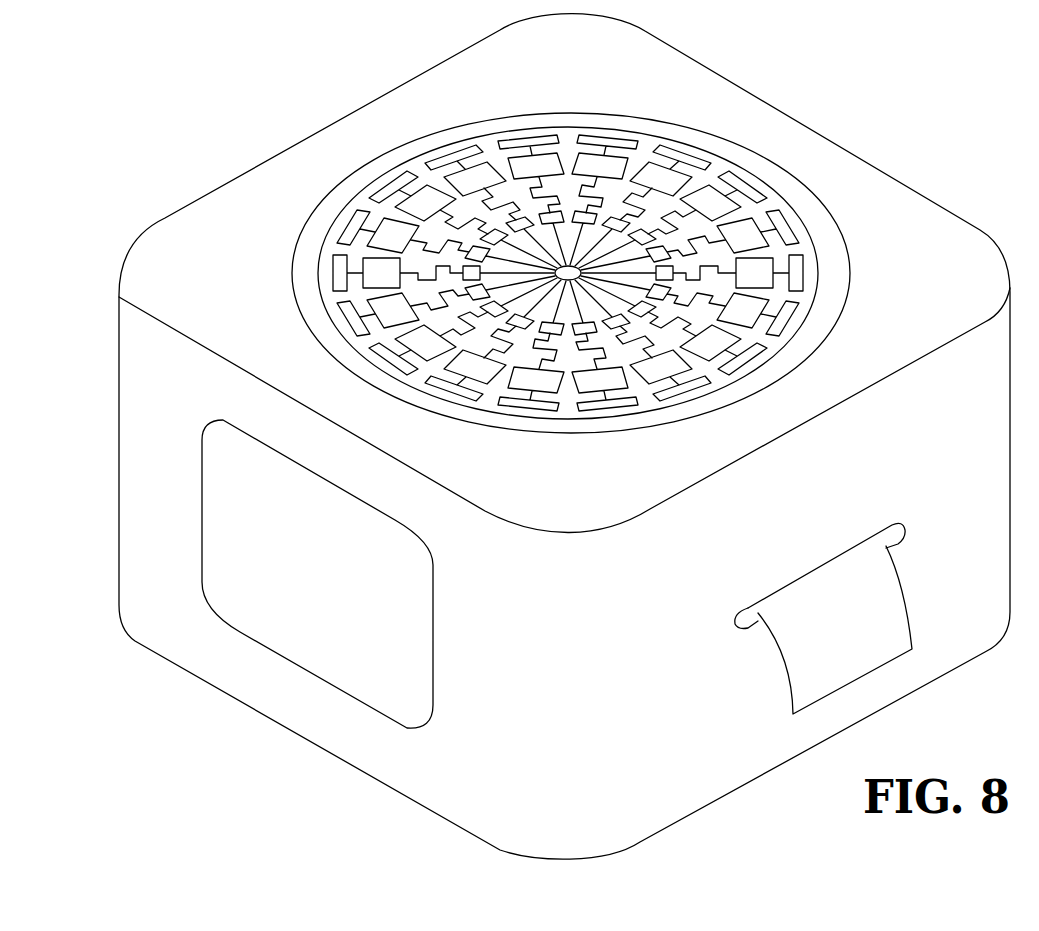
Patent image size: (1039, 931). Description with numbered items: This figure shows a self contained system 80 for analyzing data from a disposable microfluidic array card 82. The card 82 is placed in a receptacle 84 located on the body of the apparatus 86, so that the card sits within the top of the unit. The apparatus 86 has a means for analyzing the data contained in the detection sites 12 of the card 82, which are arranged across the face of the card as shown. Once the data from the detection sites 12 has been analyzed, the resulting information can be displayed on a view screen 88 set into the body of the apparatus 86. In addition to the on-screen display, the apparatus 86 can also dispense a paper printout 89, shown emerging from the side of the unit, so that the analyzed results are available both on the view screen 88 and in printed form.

The self contained system 80 is at (229, 149).
The disposable microfluidic array card 82 is at (572, 152).
The receptacle 84 is at (852, 272).
The detection sites 12 is at (708, 204).
The apparatus 86 is at (650, 637).
The view screen 88 is at (333, 572).
The paper printout 89 is at (865, 645).